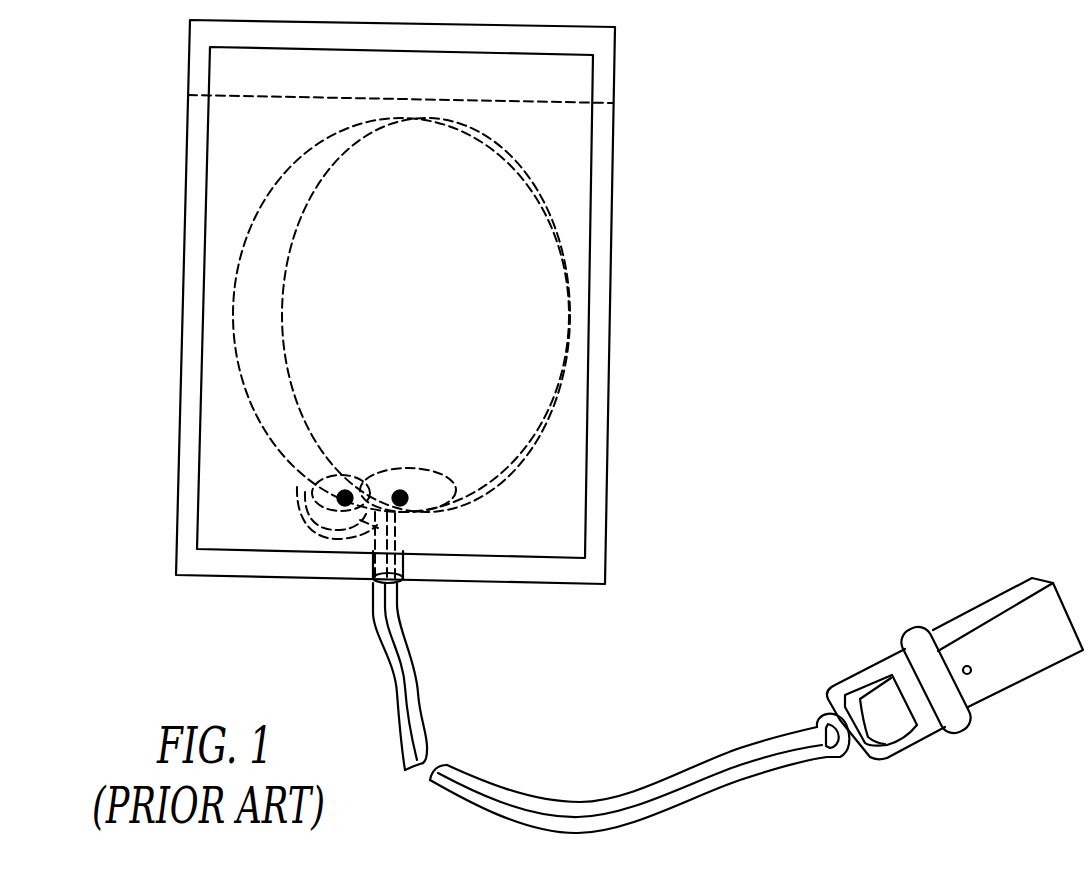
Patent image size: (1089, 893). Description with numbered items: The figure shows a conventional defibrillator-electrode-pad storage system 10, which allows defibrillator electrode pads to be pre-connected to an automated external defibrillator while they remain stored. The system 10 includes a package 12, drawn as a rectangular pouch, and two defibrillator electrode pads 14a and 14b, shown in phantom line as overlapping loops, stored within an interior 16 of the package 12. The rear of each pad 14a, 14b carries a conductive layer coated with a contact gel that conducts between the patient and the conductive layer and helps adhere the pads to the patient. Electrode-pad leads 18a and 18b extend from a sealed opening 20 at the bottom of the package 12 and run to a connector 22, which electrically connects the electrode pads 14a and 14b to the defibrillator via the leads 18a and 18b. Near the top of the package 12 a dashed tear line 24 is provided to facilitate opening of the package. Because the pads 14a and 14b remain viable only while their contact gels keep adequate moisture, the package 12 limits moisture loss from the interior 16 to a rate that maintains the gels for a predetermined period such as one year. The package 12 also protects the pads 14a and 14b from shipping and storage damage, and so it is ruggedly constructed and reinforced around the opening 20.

The defibrillator-electrode-pad storage system 10 is at (845, 210).
The package 12 is at (613, 252).
The defibrillator electrode pad 14a is at (303, 146).
The defibrillator electrode pad 14b is at (498, 142).
The interior 16 is at (237, 198).
The electrode-pad lead 18a is at (392, 680).
The electrode-pad lead 18b is at (418, 677).
The sealed opening 20 is at (403, 582).
The connector 22 is at (993, 593).
The tear line 24 is at (613, 103).